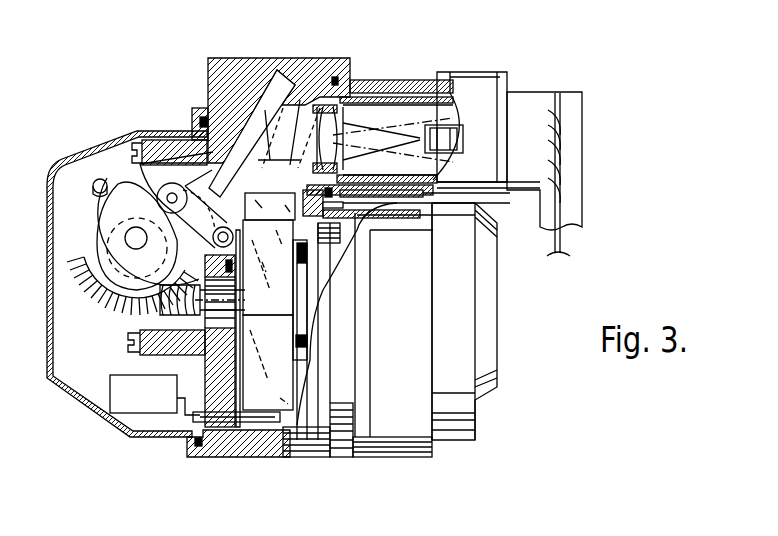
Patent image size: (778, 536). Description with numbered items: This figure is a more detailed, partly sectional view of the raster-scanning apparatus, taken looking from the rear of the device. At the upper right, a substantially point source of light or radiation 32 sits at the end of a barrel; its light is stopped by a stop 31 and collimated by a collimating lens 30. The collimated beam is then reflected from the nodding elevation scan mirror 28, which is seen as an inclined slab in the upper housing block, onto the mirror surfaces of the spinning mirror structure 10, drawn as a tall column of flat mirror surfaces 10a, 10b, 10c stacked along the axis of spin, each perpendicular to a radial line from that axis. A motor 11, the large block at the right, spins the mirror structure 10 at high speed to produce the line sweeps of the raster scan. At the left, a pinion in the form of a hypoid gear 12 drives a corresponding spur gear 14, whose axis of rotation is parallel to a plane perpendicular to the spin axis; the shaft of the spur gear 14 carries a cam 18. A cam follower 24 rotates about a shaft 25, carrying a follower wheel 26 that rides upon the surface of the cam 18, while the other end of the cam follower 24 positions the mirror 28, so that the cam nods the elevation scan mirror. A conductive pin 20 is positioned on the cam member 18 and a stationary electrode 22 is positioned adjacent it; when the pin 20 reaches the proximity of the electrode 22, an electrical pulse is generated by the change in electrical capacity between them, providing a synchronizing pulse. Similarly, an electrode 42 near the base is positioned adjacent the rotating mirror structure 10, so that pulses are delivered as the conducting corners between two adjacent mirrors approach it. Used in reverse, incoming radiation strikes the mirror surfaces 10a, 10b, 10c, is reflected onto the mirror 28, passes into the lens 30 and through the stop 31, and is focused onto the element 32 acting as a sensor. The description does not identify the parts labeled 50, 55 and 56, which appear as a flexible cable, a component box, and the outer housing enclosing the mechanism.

The spinning mirror structure 10 is at (305, 243).
The mirror surface 10a is at (257, 197).
The mirror surface 10b is at (283, 300).
The mirror surface 10c is at (282, 383).
The motor 11 is at (462, 398).
The hypoid gear 12 is at (187, 325).
The spur gear 14 is at (108, 306).
The cam 18 is at (158, 190).
The conductive pin 20 is at (112, 212).
The stationary electrode 22 is at (94, 182).
The cam follower 24 is at (182, 162).
The shaft 25 is at (233, 238).
The follower wheel 26 is at (138, 150).
The mirror 28 is at (263, 112).
The collimating lens 30 is at (333, 139).
The stop 31 is at (360, 103).
The light source 32 is at (424, 136).
The electrode 42 is at (232, 432).
The flexible cable 50 is at (541, 125).
The circuit component 55 is at (117, 392).
The housing 56 is at (108, 427).